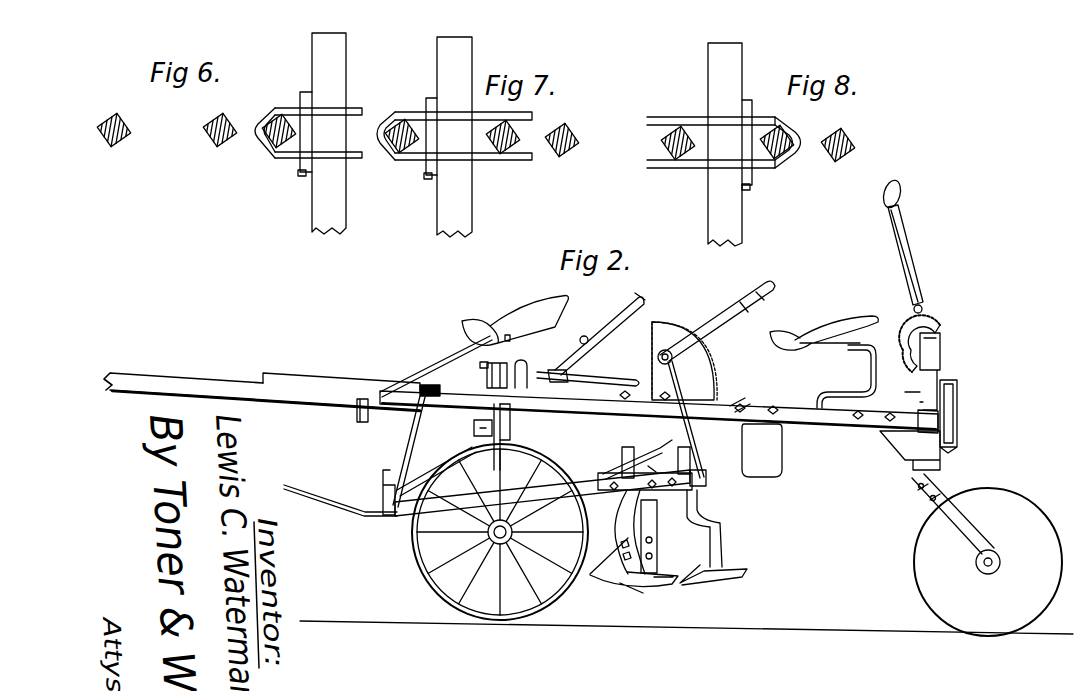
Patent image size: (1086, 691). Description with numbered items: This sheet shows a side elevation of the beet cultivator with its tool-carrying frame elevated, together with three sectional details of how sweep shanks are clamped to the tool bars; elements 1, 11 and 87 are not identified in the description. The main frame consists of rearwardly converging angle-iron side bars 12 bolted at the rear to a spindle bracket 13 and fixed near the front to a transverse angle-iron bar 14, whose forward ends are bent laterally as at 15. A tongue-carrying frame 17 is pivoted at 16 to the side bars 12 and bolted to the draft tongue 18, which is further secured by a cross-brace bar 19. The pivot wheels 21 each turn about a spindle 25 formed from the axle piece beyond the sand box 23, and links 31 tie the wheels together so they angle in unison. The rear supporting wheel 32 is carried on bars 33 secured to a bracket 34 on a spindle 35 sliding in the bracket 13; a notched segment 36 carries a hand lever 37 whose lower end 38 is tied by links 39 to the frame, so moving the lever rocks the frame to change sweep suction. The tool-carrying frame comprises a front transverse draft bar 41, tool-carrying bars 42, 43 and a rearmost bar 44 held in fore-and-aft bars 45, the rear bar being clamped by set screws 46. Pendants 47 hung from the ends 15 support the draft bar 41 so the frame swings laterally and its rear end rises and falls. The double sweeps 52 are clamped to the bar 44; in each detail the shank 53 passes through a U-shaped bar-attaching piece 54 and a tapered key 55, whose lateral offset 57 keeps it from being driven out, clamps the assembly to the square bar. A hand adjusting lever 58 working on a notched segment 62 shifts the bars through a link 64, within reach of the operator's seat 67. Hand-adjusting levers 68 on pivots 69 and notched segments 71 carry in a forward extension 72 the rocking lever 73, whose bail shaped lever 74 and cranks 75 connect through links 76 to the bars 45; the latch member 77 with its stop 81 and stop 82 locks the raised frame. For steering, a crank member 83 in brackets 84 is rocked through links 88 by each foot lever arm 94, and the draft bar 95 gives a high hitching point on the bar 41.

In FIG. 2, the seat 1 is at (515, 321).
In FIG. 2, the frame bar 11 is at (462, 392).
In FIG. 2, the side bars 12 is at (785, 410).
In FIG. 2, the spindle bracket 13 is at (922, 412).
In FIG. 2, the transverse angle-iron bar 14 is at (512, 411).
In FIG. 2, the laterally bent forward ends 15 is at (420, 373).
In FIG. 2, the pivot 16 is at (432, 385).
In FIG. 2, the tongue-carrying frame 17 is at (318, 382).
In FIG. 2, the draft tongue 18 is at (185, 385).
In FIG. 2, the cross-brace bar 19 is at (357, 412).
In FIG. 2, the pivot wheels 21 is at (430, 578).
In FIG. 2, the sand box 23 is at (645, 490).
In FIG. 2, the spindle 25 is at (503, 432).
In FIG. 2, the links 31 is at (440, 530).
In FIG. 2, the rear supporting wheel 32 is at (1018, 500).
In FIG. 2, the bars 33 is at (930, 510).
In FIG. 2, the bracket 34 is at (940, 474).
In FIG. 2, the spindle 35 is at (912, 392).
In FIG. 2, the notched segment 36 is at (940, 324).
In FIG. 2, the hand lever 37 is at (912, 256).
In FIG. 2, the lower end of hand lever 38 is at (942, 362).
In FIG. 2, the links 39 is at (958, 410).
In FIG. 2, the front transverse draft bar 41 is at (383, 498).
In FIG. 6, the forward tool-carrying bar 42 is at (124, 142).
In FIG. 7, the forward tool-carrying bar 42 is at (400, 124).
In FIG. 8, the forward tool-carrying bar 42 is at (676, 130).
In FIG. 2, the forward tool-carrying bar 42 is at (606, 478).
In FIG. 6, the intermediate tool-carrying bar 43 is at (216, 143).
In FIG. 7, the intermediate tool-carrying bar 43 is at (516, 132).
In FIG. 8, the intermediate tool-carrying bar 43 is at (785, 150).
In FIG. 6, the rearmost tool-carrying bar 44 is at (270, 140).
In FIG. 7, the rearmost tool-carrying bar 44 is at (560, 153).
In FIG. 8, the rearmost tool-carrying bar 44 is at (846, 158).
In FIG. 2, the rearmost tool-carrying bar 44 is at (671, 516).
In FIG. 2, the fore-and-aft bars 45 is at (405, 512).
In FIG. 2, the set screws 46 is at (706, 478).
In FIG. 2, the pendants 47 is at (410, 425).
In FIG. 2, the double sweeps 52 is at (630, 592).
In FIG. 6, the shank 53 is at (312, 218).
In FIG. 7, the shank 53 is at (437, 95).
In FIG. 8, the shank 53 is at (708, 214).
In FIG. 2, the shank 53 is at (624, 520).
In FIG. 6, the U-shaped bar-attaching piece 54 is at (275, 108).
In FIG. 7, the U-shaped bar-attaching piece 54 is at (488, 160).
In FIG. 8, the U-shaped bar-attaching piece 54 is at (703, 168).
In FIG. 6, the tapered key 55 is at (305, 92).
In FIG. 7, the tapered key 55 is at (431, 136).
In FIG. 8, the tapered key 55 is at (750, 112).
In FIG. 6, the lateral offset 57 is at (300, 178).
In FIG. 7, the lateral offset 57 is at (426, 178).
In FIG. 8, the lateral offset 57 is at (750, 190).
In FIG. 6, the hand adjusting lever 58 is at (292, 142).
In FIG. 2, the hand adjusting lever 58 is at (738, 400).
In FIG. 2, the notched segment 62 is at (658, 456).
In FIG. 2, the link 64 is at (626, 447).
In FIG. 2, the operator's seat 67 is at (803, 332).
In FIG. 2, the hand-adjusting levers 68 is at (776, 286).
In FIG. 2, the pivots 69 is at (684, 361).
In FIG. 2, the notched segments 71 is at (660, 332).
In FIG. 2, the forward extension 72 is at (570, 372).
In FIG. 2, the rocking lever 73 is at (600, 380).
In FIG. 2, the bail shaped lever 74 is at (570, 382).
In FIG. 2, the cranks 75 is at (667, 350).
In FIG. 2, the links 76 is at (695, 443).
In FIG. 2, the latch member 77 is at (615, 318).
In FIG. 2, the stop 81 is at (580, 342).
In FIG. 2, the stop 82 is at (633, 290).
In FIG. 2, the crank member 83 is at (430, 462).
In FIG. 2, the brackets 84 is at (474, 430).
In FIG. 2, the post cap 87 is at (480, 364).
In FIG. 2, the links 88 is at (496, 366).
In FIG. 2, the arm 94 is at (527, 364).
In FIG. 2, the draft bar 95 is at (330, 501).